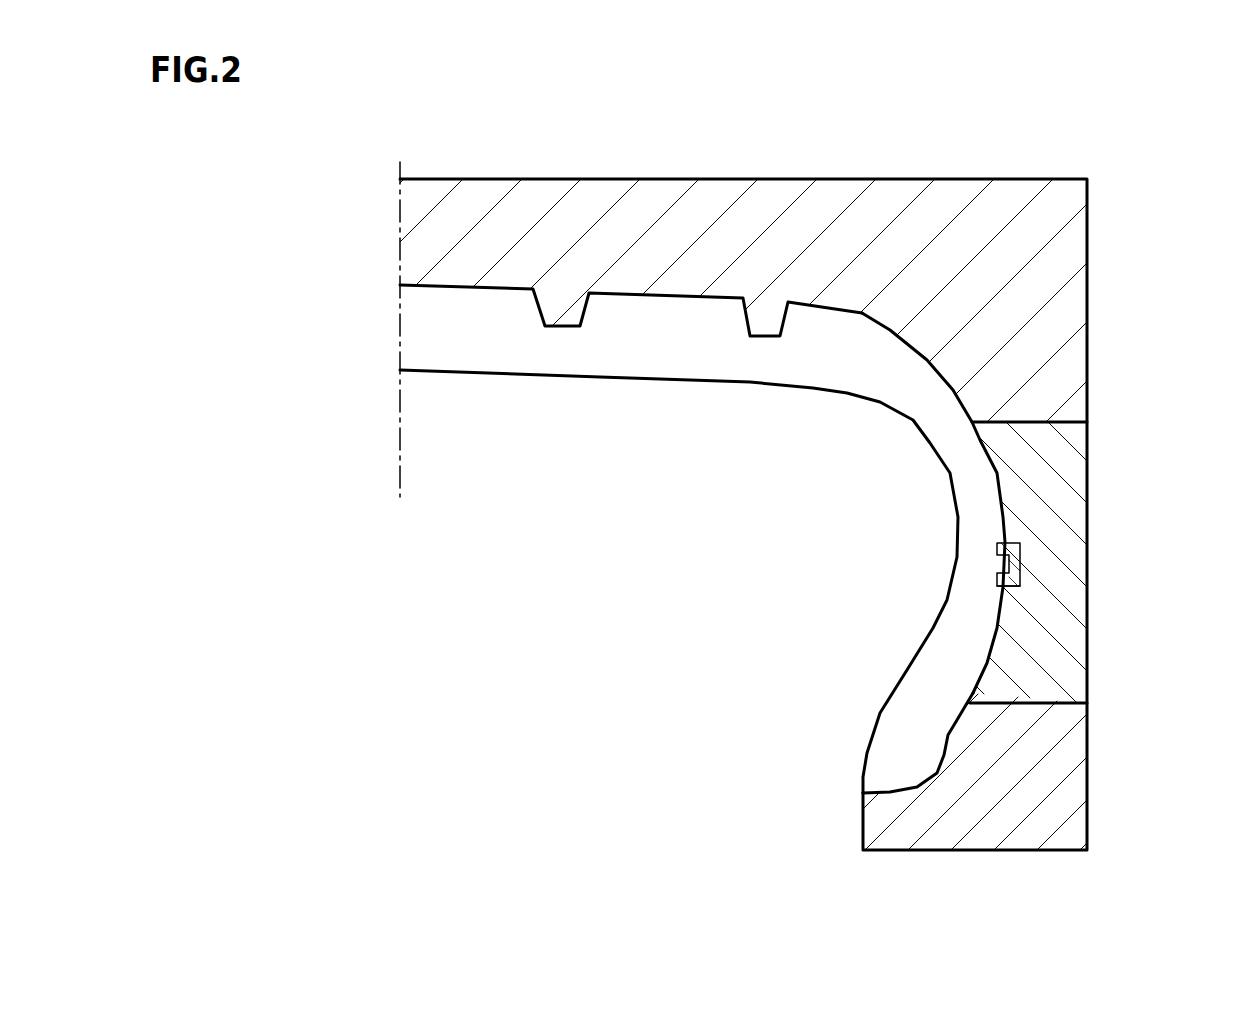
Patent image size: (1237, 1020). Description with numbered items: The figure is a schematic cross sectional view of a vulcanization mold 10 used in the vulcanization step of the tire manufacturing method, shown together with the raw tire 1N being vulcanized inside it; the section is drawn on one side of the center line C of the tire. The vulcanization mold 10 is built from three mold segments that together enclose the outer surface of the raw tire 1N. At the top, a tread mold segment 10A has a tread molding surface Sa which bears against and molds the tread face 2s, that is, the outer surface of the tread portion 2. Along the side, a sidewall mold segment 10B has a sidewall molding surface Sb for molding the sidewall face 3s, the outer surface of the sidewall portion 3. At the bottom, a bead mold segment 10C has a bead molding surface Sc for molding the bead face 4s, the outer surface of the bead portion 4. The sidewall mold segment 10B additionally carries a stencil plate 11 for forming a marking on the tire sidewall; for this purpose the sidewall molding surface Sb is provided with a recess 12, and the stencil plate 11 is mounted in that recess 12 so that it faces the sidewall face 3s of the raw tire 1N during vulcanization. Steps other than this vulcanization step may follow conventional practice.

The raw tire 1N is at (600, 347).
The tread portion 2 is at (637, 292).
The tread face 2s is at (631, 222).
The sidewall portion 3 is at (847, 525).
The sidewall face 3s is at (1049, 500).
The bead portion 4 is at (1050, 743).
The bead face 4s is at (1050, 743).
The vulcanization mold 10 is at (811, 470).
The tread mold segment 10A is at (867, 215).
The sidewall mold segment 10B is at (1096, 562).
The bead mold segment 10C is at (1060, 808).
The stencil plate 11 is at (1013, 595).
The recess 12 is at (1018, 548).
The tread molding surface Sa is at (631, 222).
The sidewall molding surface Sb is at (1020, 500).
The bead molding surface Sc is at (986, 742).
The tire equator / center line C is at (400, 345).